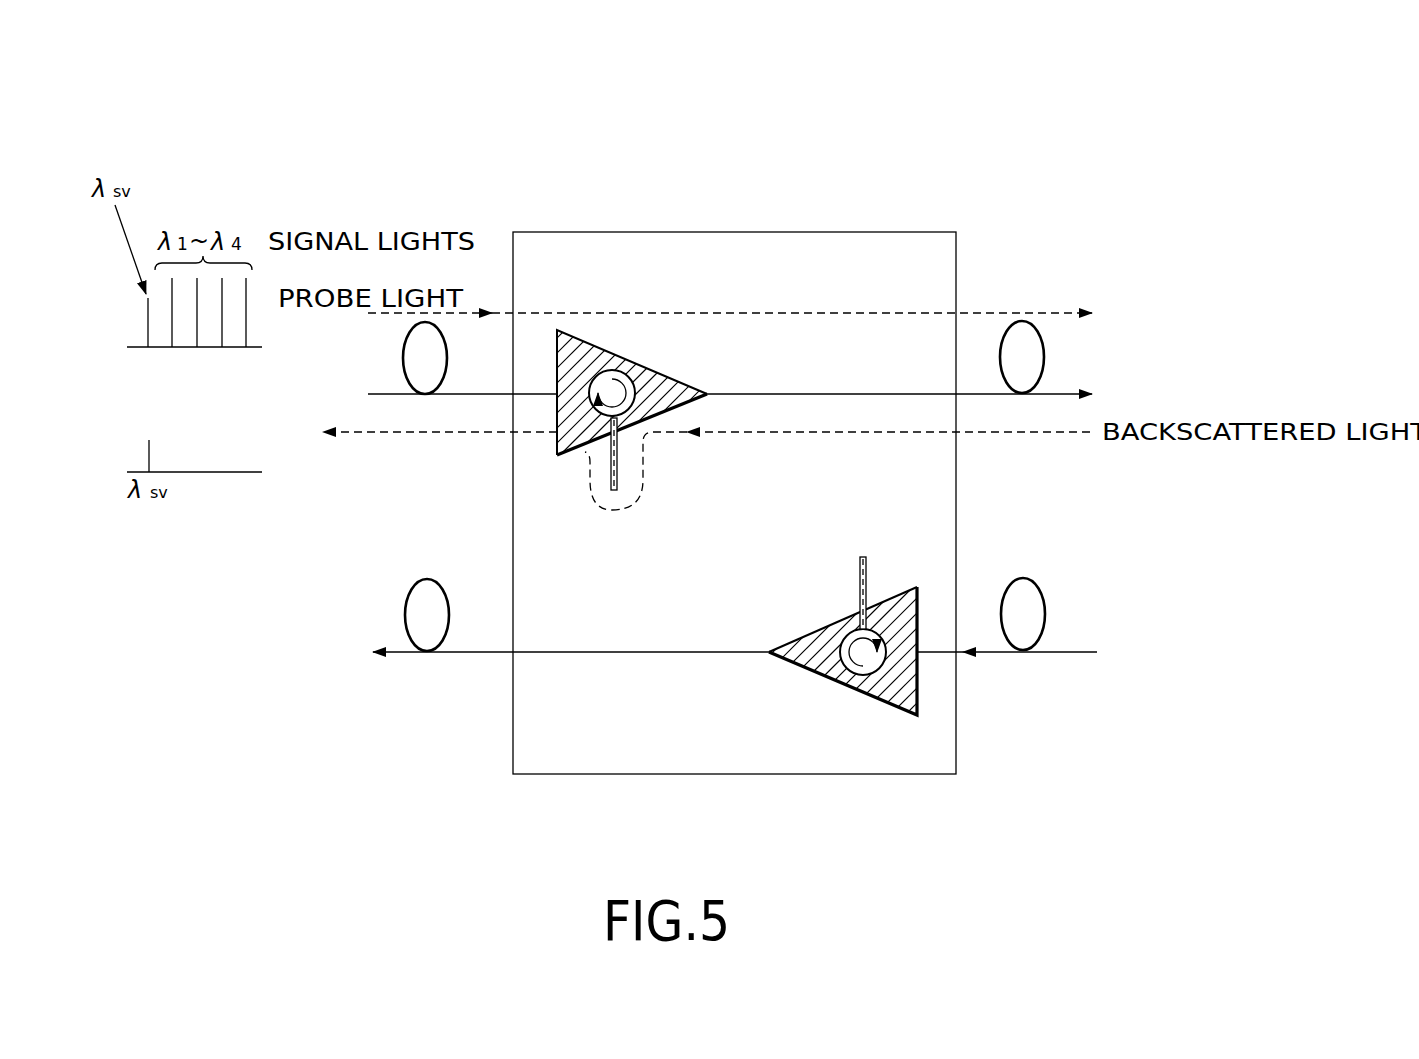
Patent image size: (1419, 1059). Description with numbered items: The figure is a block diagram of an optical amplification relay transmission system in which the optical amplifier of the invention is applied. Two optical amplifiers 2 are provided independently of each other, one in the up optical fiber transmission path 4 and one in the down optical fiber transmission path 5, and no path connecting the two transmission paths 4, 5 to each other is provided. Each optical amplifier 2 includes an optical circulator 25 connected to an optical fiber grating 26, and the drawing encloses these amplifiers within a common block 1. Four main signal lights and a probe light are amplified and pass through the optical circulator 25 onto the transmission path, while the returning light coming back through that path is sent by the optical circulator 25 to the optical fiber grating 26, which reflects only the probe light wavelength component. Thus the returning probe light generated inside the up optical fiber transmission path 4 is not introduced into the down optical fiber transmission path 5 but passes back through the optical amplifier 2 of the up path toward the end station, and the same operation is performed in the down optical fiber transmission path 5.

The optical node / housing 1 is at (720, 232).
The optical amplifier 2 is at (582, 448).
The up optical fiber transmission path 4 is at (1044, 363).
The down optical fiber transmission path 5 is at (993, 654).
The optical circulator 25 is at (590, 376).
The optical fiber grating 26 is at (618, 463).